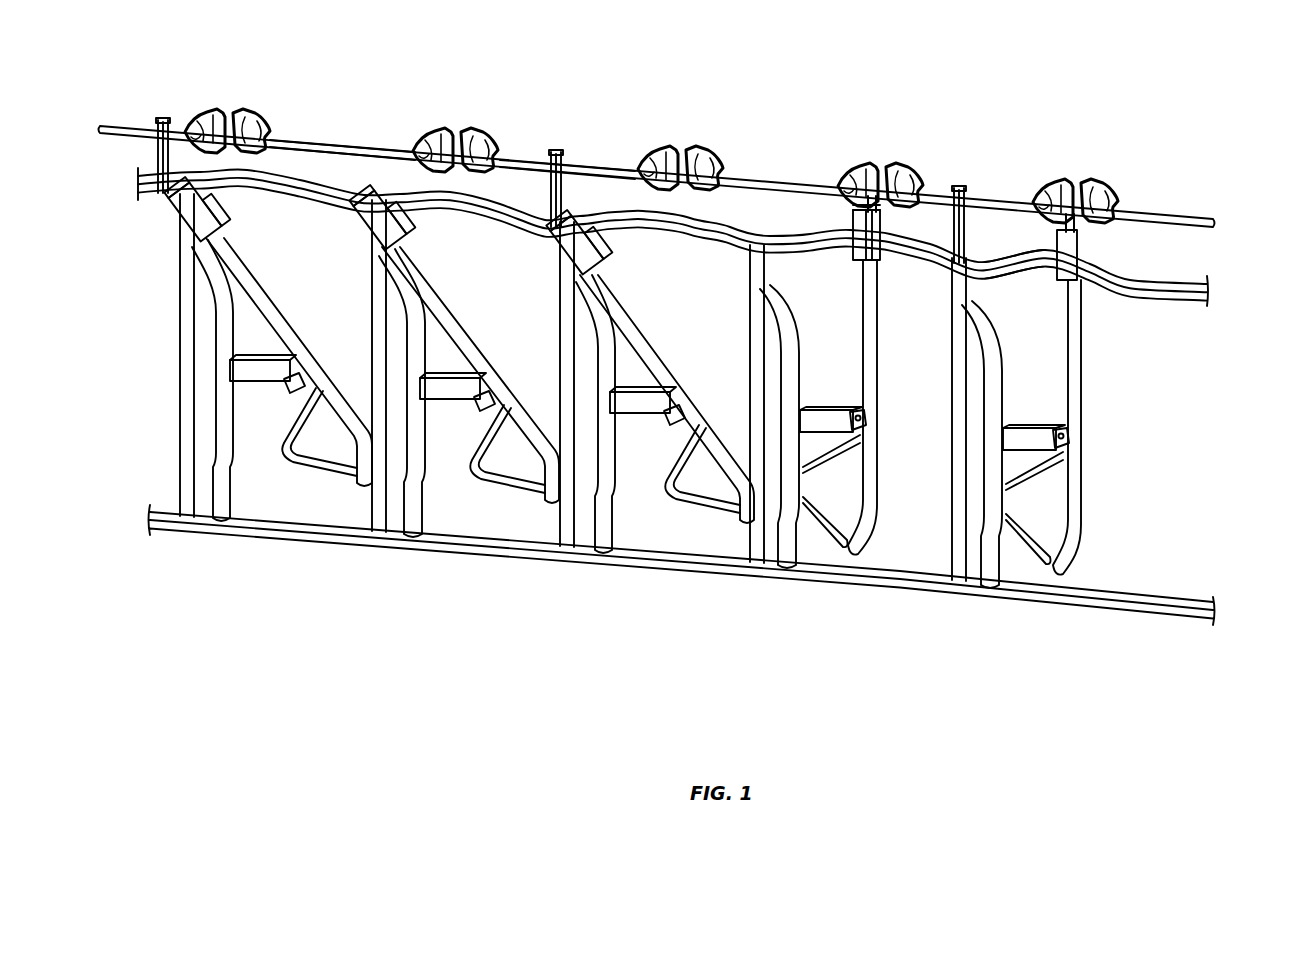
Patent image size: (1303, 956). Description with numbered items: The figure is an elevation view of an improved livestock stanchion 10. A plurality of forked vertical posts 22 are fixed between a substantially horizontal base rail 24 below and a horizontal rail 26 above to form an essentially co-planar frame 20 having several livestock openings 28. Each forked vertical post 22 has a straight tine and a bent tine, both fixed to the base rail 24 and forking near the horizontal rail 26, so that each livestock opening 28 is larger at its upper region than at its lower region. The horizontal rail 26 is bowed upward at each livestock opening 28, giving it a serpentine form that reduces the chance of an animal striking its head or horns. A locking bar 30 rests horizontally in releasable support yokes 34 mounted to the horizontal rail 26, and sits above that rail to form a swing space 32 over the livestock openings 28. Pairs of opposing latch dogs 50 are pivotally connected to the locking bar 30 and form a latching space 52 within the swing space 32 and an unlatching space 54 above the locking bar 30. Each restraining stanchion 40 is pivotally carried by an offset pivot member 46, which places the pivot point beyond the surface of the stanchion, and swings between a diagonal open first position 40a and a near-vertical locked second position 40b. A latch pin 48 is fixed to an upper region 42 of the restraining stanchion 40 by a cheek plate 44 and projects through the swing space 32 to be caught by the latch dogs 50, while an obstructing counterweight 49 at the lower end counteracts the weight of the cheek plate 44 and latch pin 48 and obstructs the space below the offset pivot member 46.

The livestock stanchion 10 is at (528, 26).
The frame 20 is at (1195, 280).
The forked vertical post 22 is at (955, 296).
The base rail 24 is at (672, 568).
The horizontal rail 26 is at (1032, 262).
The livestock opening 28 is at (685, 310).
The locking bar 30 is at (135, 122).
The swing space 32 is at (494, 179).
The support yoke 34 is at (157, 158).
The restraining stanchion 40 is at (668, 413).
The first position 40a is at (248, 290).
The second position 40b is at (1080, 410).
The upper region 42 is at (378, 250).
The cheek plate 44 is at (358, 222).
The offset pivot member 46 is at (470, 403).
The latch pin 48 is at (375, 198).
The obstructing counterweight 49 is at (505, 486).
The latch dog 50 is at (681, 154).
The latching space 52 is at (681, 212).
The unlatching space 54 is at (659, 146).